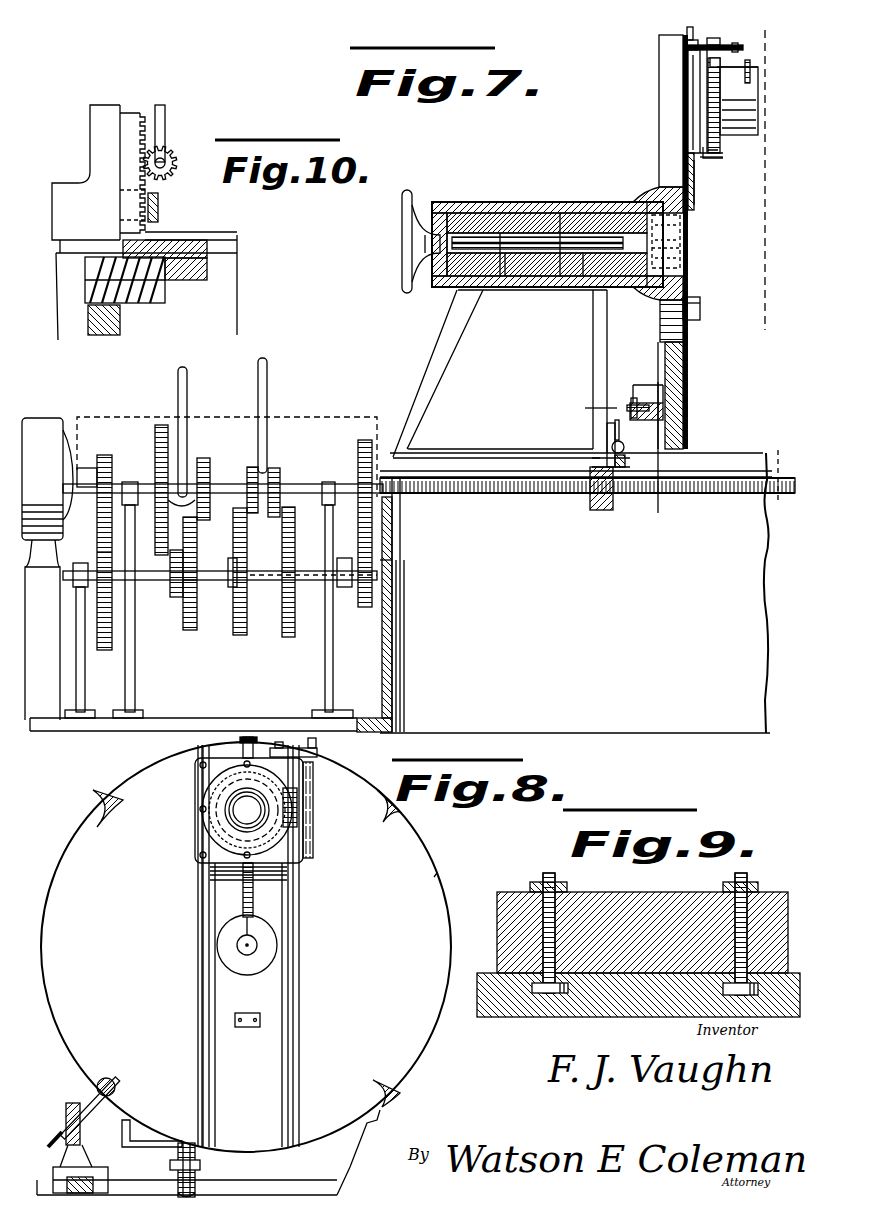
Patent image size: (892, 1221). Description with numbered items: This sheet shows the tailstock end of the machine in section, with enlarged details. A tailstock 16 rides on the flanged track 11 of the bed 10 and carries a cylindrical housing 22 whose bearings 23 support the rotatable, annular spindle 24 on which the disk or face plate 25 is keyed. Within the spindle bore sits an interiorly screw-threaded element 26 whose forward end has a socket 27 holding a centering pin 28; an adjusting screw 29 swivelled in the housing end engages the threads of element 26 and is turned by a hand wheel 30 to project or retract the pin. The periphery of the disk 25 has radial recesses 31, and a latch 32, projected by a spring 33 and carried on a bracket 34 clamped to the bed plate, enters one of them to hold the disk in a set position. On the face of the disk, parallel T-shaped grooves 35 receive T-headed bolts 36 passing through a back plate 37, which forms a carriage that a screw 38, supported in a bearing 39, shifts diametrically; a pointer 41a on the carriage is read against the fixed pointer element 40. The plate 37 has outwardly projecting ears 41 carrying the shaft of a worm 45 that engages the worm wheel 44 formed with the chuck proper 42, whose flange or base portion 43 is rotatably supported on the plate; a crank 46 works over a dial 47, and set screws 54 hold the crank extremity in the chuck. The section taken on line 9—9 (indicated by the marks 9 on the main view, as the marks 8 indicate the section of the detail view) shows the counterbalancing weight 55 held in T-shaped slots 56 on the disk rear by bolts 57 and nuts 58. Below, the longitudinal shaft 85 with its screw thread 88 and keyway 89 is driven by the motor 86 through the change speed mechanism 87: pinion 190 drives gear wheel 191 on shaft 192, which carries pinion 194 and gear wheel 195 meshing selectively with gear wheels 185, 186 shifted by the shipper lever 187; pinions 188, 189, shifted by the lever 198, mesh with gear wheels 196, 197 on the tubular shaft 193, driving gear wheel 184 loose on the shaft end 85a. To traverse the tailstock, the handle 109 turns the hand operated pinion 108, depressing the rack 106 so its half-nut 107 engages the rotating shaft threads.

In FIG. 7, the section line 8— 8 is at (754, 45).
In FIG. 7, the section line 9— 9 is at (615, 406).
In FIG. 7, the bed 10 is at (663, 736).
In FIG. 7, the track 11 is at (575, 593).
In FIG. 8, the track 11 is at (43, 1197).
In FIG. 10, the tailstock 16 is at (90, 153).
In FIG. 7, the tailstock 16 is at (576, 322).
In FIG. 7, the cylindrical housing 22 is at (558, 287).
In FIG. 7, the bearings 23 is at (460, 207).
In FIG. 7, the spindle 24 is at (562, 220).
In FIG. 7, the disk or face plate 25 is at (695, 173).
In FIG. 8, the disk or face plate 25 is at (436, 877).
In FIG. 9, the disk or face plate 25 is at (493, 993).
In FIG. 7, the interiorly screw-threaded element 26 is at (583, 290).
In FIG. 7, the socket 27 is at (685, 222).
In FIG. 8, the socket 27 is at (257, 948).
In FIG. 7, the centering pin 28 is at (690, 245).
In FIG. 7, the adjusting screw 29 is at (508, 287).
In FIG. 7, the hand wheel 30 is at (402, 200).
In FIG. 7, the radial recesses 31 is at (675, 97).
In FIG. 8, the radial recesses 31 is at (133, 1095).
In FIG. 8, the latch 32 is at (100, 1079).
In FIG. 8, the spring 33 is at (65, 1112).
In FIG. 8, the bracket 34 is at (70, 1100).
In FIG. 8, the T-shaped grooves 35 is at (200, 929).
In FIG. 8, the T-headed bolts 36 is at (197, 858).
In FIG. 7, the back plate 37 is at (690, 102).
In FIG. 8, the back plate 37 is at (197, 841).
In FIG. 7, the screw 38 is at (694, 198).
In FIG. 8, the screw 38 is at (243, 901).
In FIG. 7, the bearing 39 is at (687, 33).
In FIG. 8, the bearing 39 is at (243, 745).
In FIG. 7, the element carrying second pointer 40 is at (697, 302).
In FIG. 8, the element carrying second pointer 40 is at (245, 1013).
In FIG. 7, the outwardly projecting ears 41 is at (713, 157).
In FIG. 8, the outwardly projecting ears 41 is at (305, 758).
In FIG. 7, the pointer 41a is at (693, 150).
In FIG. 8, the pointer 41a is at (298, 884).
In FIG. 7, the chuck proper 42 is at (748, 95).
In FIG. 8, the chuck proper 42 is at (223, 818).
In FIG. 8, the flange or base portion 43 is at (200, 832).
In FIG. 7, the worm wheel 44 is at (710, 107).
In FIG. 8, the worm wheel 44 is at (217, 784).
In FIG. 8, the worm 45 is at (288, 808).
In FIG. 7, the crank 46 is at (713, 40).
In FIG. 8, the crank 46 is at (318, 752).
In FIG. 7, the dial 47 is at (733, 42).
In FIG. 8, the dial 47 is at (320, 750).
In FIG. 7, the set screws 54 is at (757, 72).
In FIG. 8, the set screws 54 is at (270, 803).
In FIG. 7, the weight 55 is at (643, 383).
In FIG. 9, the weight 55 is at (607, 905).
In FIG. 7, the T-shaped slots 56 is at (685, 418).
In FIG. 9, the T-shaped slots 56 is at (553, 997).
In FIG. 7, the bolts 57 is at (637, 403).
In FIG. 9, the bolts 57 is at (735, 913).
In FIG. 9, the nuts 58 is at (753, 890).
In FIG. 10, the shaft 85 is at (160, 305).
In FIG. 7, the shaft 85 is at (548, 495).
In FIG. 8, the shaft 85 is at (200, 1193).
In FIG. 7, the shaft end 85a is at (307, 487).
In FIG. 7, the motor 86 is at (48, 418).
In FIG. 7, the change speed mechanism 87 is at (295, 451).
In FIG. 7, the screw thread 88 is at (637, 497).
In FIG. 7, the keyway 89 is at (780, 466).
In FIG. 10, the rack 106 is at (130, 120).
In FIG. 7, the rack 106 is at (607, 438).
In FIG. 8, the rack 106 is at (198, 1190).
In FIG. 10, the half-nut 107 is at (182, 250).
In FIG. 7, the half-nut 107 is at (618, 495).
In FIG. 8, the half-nut 107 is at (175, 1190).
In FIG. 10, the hand operated pinion 108 is at (172, 147).
In FIG. 7, the hand operated pinion 108 is at (623, 449).
In FIG. 8, the hand operated pinion 108 is at (190, 1143).
In FIG. 10, the handle 109 is at (167, 108).
In FIG. 7, the handle 109 is at (613, 432).
In FIG. 8, the handle 109 is at (157, 1117).
In FIG. 7, the gear wheel 184 is at (367, 440).
In FIG. 7, the large gear wheel 185 is at (148, 450).
In FIG. 7, the small gear wheel 186 is at (200, 455).
In FIG. 7, the shipper lever 187 is at (188, 373).
In FIG. 7, the pinion 188 is at (250, 467).
In FIG. 7, the pinion 189 is at (277, 407).
In FIG. 7, the pinion 190 is at (105, 455).
In FIG. 7, the large gear wheel 191 is at (100, 652).
In FIG. 7, the shaft 192 is at (157, 582).
In FIG. 7, the tubular shaft 193 is at (267, 582).
In FIG. 7, the pinion 194 is at (203, 620).
In FIG. 7, the large gear wheel 195 is at (177, 587).
In FIG. 7, the gear wheel 196 is at (243, 553).
In FIG. 7, the gear wheel 197 is at (290, 637).
In FIG. 7, the lever 198 is at (383, 592).